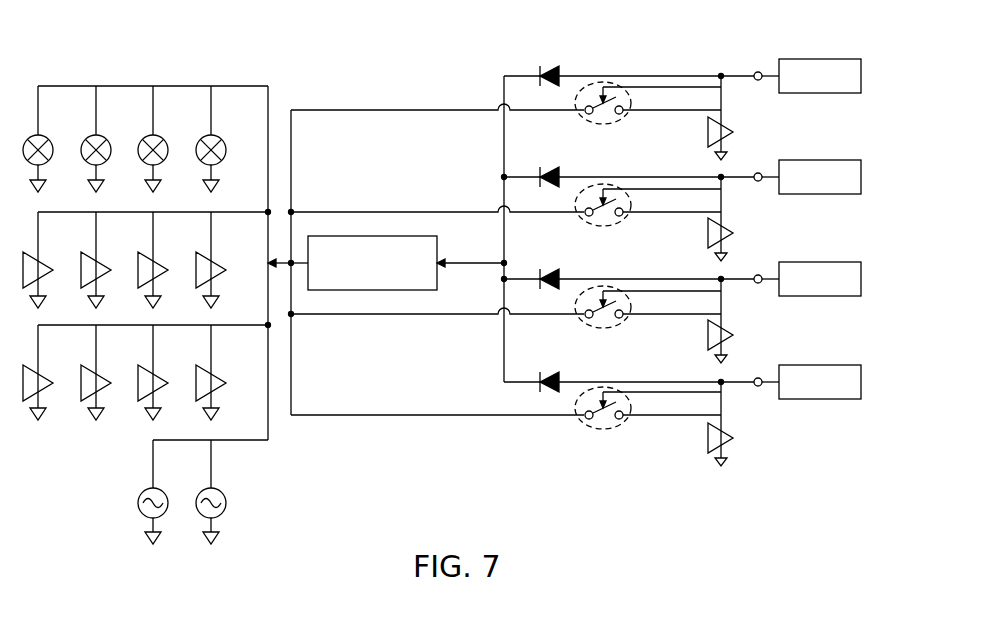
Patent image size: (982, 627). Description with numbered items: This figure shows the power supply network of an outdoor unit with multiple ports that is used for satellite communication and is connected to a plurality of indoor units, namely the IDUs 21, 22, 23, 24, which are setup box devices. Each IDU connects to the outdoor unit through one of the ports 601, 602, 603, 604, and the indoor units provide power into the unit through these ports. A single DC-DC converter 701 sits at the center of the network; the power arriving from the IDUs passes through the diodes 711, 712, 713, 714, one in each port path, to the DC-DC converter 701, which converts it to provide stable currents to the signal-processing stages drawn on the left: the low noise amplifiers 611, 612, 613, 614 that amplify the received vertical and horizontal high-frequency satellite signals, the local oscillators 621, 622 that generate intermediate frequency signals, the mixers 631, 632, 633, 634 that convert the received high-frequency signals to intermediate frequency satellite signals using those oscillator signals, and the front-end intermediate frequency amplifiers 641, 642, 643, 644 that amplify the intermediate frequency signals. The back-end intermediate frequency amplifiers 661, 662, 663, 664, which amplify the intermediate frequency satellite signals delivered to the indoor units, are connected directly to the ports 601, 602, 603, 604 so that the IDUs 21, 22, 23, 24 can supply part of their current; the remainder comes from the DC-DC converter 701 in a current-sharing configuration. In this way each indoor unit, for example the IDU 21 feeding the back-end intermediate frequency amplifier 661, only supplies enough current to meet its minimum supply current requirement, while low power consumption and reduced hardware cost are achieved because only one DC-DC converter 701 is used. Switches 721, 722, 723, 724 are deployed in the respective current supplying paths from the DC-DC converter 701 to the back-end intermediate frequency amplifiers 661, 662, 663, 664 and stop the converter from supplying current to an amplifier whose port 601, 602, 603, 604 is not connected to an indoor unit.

The IDU 21 is at (861, 76).
The IDU 22 is at (861, 177).
The IDU 23 is at (861, 279).
The IDU 24 is at (861, 382).
The port 601 is at (758, 71).
The port 602 is at (758, 172).
The port 603 is at (758, 274).
The port 604 is at (758, 377).
The low noise amplifier 611 is at (46, 375).
The low noise amplifier 612 is at (104, 375).
The low noise amplifier 613 is at (161, 375).
The low noise amplifier 614 is at (219, 375).
The local oscillator 621 is at (164, 491).
The local oscillator 622 is at (222, 491).
The mixer 631 is at (50, 139).
The mixer 632 is at (108, 139).
The mixer 633 is at (165, 139).
The mixer 634 is at (223, 139).
The front-end intermediate frequency amplifier 641 is at (46, 262).
The front-end intermediate frequency amplifier 642 is at (104, 262).
The front-end intermediate frequency amplifier 643 is at (161, 262).
The front-end intermediate frequency amplifier 644 is at (219, 262).
The back-end intermediate frequency amplifier 661 is at (707, 134).
The back-end intermediate frequency amplifier 662 is at (707, 235).
The back-end intermediate frequency amplifier 663 is at (707, 337).
The back-end intermediate frequency amplifier 664 is at (707, 440).
The DC-DC converter 701 is at (437, 248).
The diode 711 is at (546, 64).
The diode 712 is at (546, 165).
The diode 713 is at (546, 267).
The diode 714 is at (546, 370).
The switch 721 is at (605, 82).
The switch 722 is at (605, 184).
The switch 723 is at (605, 286).
The switch 724 is at (605, 387).